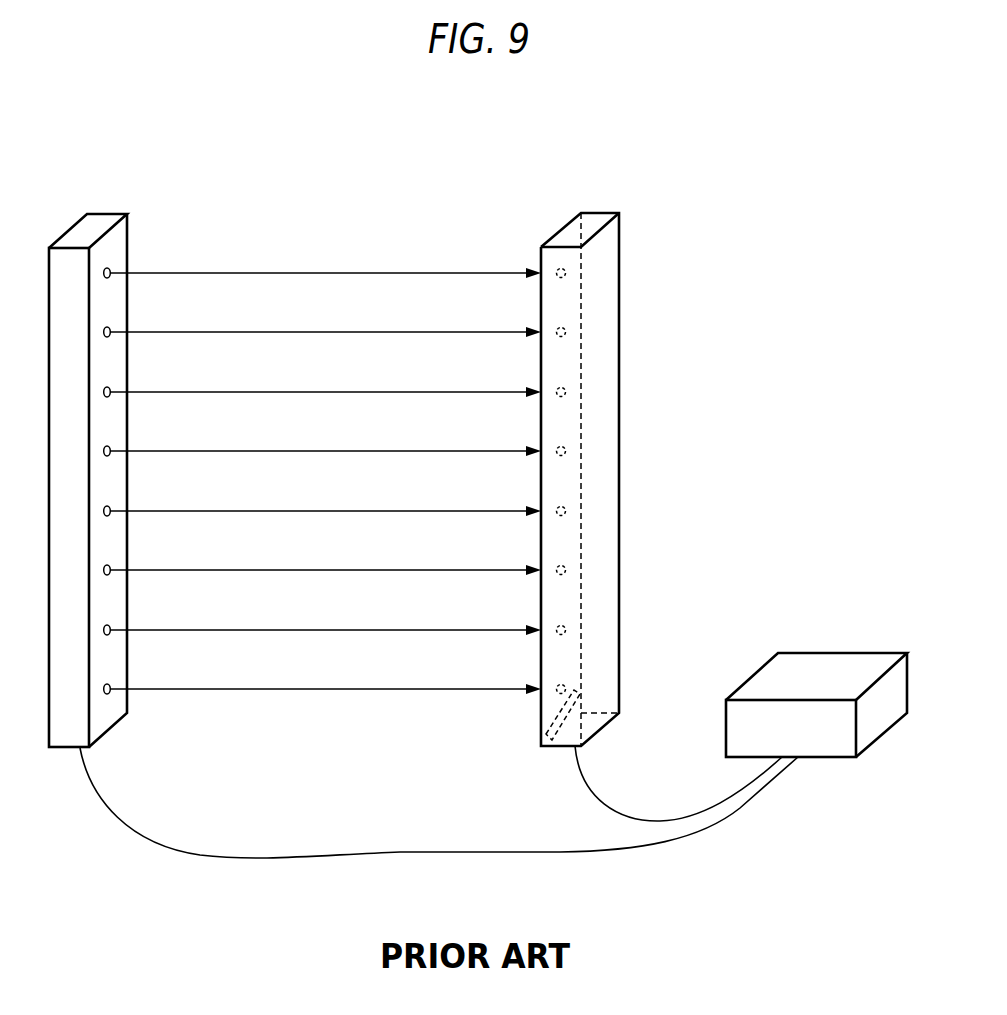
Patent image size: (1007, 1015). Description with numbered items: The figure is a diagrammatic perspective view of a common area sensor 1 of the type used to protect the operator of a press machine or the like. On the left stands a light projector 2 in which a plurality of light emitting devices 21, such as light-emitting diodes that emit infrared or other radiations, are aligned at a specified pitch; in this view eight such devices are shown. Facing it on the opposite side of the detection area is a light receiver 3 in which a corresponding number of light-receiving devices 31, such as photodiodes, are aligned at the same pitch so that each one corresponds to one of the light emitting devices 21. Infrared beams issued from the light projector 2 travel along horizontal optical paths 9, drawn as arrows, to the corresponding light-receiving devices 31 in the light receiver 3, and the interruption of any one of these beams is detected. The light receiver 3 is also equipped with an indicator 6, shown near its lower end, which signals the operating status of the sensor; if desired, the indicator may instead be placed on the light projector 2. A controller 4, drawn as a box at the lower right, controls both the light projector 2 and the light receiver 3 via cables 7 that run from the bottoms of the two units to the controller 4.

The area sensor 1 is at (651, 316).
The light projector 2 is at (110, 188).
The light emitting devices 21 is at (110, 328).
The light receiver 3 is at (632, 196).
The light-receiving devices 31 is at (556, 266).
The optical paths 9 is at (252, 260).
The indicator 6 is at (541, 716).
The controller 4 is at (817, 662).
The cables 7 is at (698, 816).